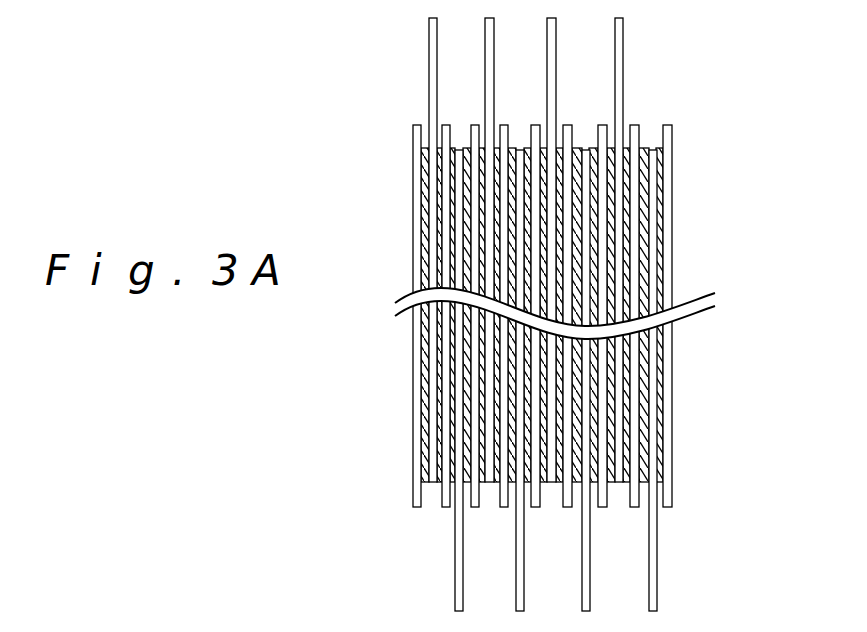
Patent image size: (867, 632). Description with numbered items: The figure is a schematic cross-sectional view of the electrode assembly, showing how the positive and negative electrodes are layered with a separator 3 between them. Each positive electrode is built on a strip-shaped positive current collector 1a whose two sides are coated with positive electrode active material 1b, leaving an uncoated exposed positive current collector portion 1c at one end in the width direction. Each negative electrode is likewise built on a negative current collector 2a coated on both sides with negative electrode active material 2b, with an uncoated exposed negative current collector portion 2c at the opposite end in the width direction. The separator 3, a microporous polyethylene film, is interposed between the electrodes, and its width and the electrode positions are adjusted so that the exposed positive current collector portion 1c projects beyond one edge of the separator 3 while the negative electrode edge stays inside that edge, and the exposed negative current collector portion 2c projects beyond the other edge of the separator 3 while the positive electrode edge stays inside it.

The positive current collector 1a is at (552, 438).
The positive electrode active material 1b is at (610, 457).
The exposed positive current collector portion 1c is at (555, 58).
The negative current collector 2a is at (585, 210).
The negative electrode active material 2b is at (642, 265).
The exposed negative current collector portion 2c is at (588, 582).
The separator 3 is at (598, 137).